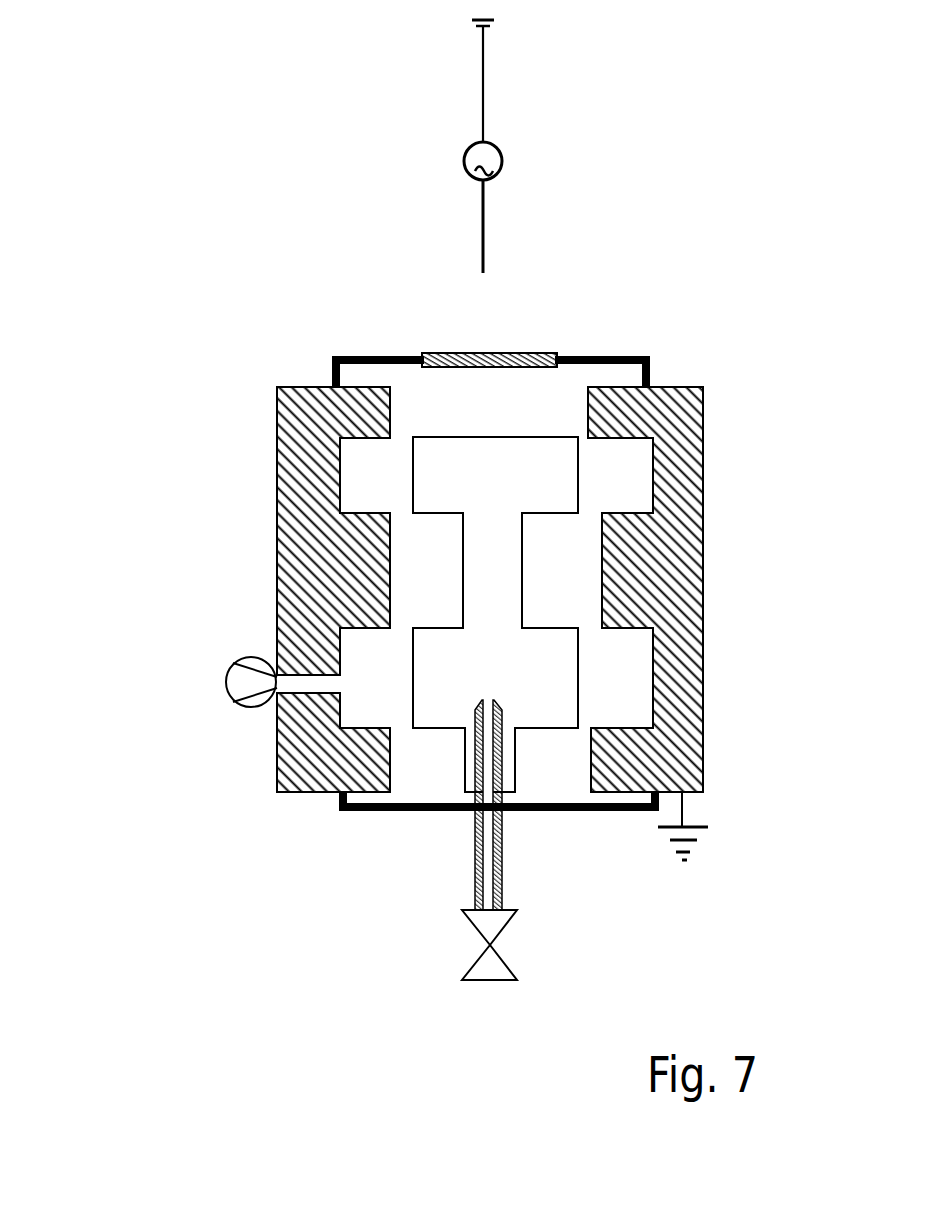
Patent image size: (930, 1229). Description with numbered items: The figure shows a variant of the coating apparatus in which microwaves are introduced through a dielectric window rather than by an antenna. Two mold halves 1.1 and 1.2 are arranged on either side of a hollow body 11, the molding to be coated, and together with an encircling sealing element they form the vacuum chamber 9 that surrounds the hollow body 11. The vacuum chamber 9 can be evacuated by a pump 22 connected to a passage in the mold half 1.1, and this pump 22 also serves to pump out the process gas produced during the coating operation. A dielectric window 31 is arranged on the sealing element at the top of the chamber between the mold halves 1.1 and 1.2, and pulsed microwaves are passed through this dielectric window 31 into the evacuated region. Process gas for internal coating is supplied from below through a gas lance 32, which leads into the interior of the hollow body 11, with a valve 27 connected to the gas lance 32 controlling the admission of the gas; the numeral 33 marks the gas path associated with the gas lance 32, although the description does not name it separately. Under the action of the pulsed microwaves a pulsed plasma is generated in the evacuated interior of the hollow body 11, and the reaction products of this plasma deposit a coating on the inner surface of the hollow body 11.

The mold half 1.1 is at (277, 462).
The mold half 1.2 is at (703, 410).
The vacuum chamber 9 is at (565, 403).
The hollow body 11 is at (443, 468).
The pump 22 is at (247, 705).
The valve 27 is at (503, 960).
The dielectric window 31 is at (510, 353).
The gas lance 32 is at (498, 863).
The gas channel 33 is at (488, 888).